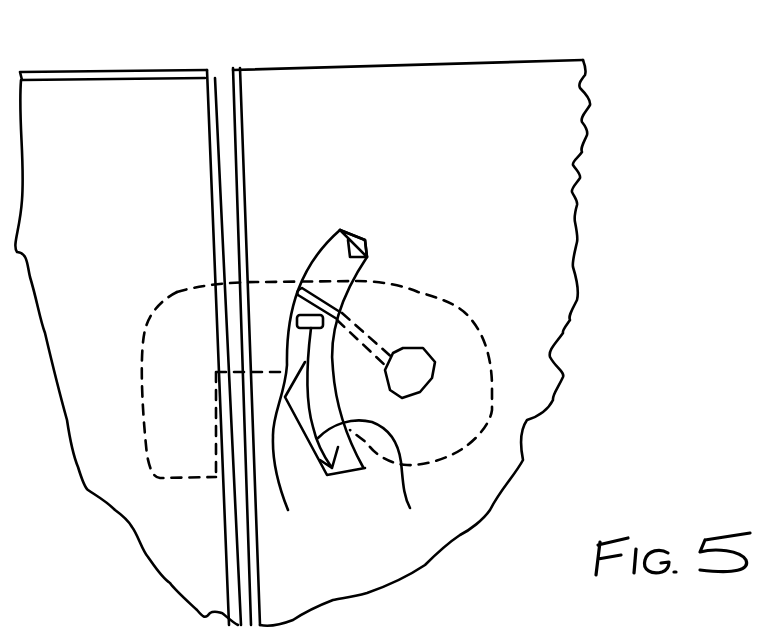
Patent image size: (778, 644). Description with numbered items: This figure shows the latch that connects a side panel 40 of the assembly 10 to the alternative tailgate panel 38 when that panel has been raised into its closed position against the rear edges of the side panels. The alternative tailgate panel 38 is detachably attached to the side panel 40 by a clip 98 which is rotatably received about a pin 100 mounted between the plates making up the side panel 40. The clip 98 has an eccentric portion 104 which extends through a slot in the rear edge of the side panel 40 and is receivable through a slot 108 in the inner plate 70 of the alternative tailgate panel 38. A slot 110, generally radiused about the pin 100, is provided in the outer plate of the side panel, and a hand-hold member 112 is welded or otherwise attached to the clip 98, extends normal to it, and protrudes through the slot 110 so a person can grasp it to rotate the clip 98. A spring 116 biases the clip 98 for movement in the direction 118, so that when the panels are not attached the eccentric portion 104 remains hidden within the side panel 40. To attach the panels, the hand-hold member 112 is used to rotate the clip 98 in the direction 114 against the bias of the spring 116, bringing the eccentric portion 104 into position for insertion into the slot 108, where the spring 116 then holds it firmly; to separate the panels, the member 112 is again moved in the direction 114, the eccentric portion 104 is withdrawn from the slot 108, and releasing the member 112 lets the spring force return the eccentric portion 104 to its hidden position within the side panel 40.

The vehicle assembly 10 is at (346, 6).
The alternative tailgate panel 38 is at (126, 347).
The side panel 40 is at (411, 343).
The inner plate 70 is at (248, 317).
The clip 98 is at (159, 410).
The pin 100 is at (534, 342).
The eccentric portion 104 is at (308, 342).
The slot 108 is at (179, 190).
The slot 110 is at (419, 222).
The hand-hold member 112 is at (322, 421).
The direction of clip rotation 114 is at (318, 321).
The spring 116 is at (413, 298).
The direction of spring bias 118 is at (384, 482).